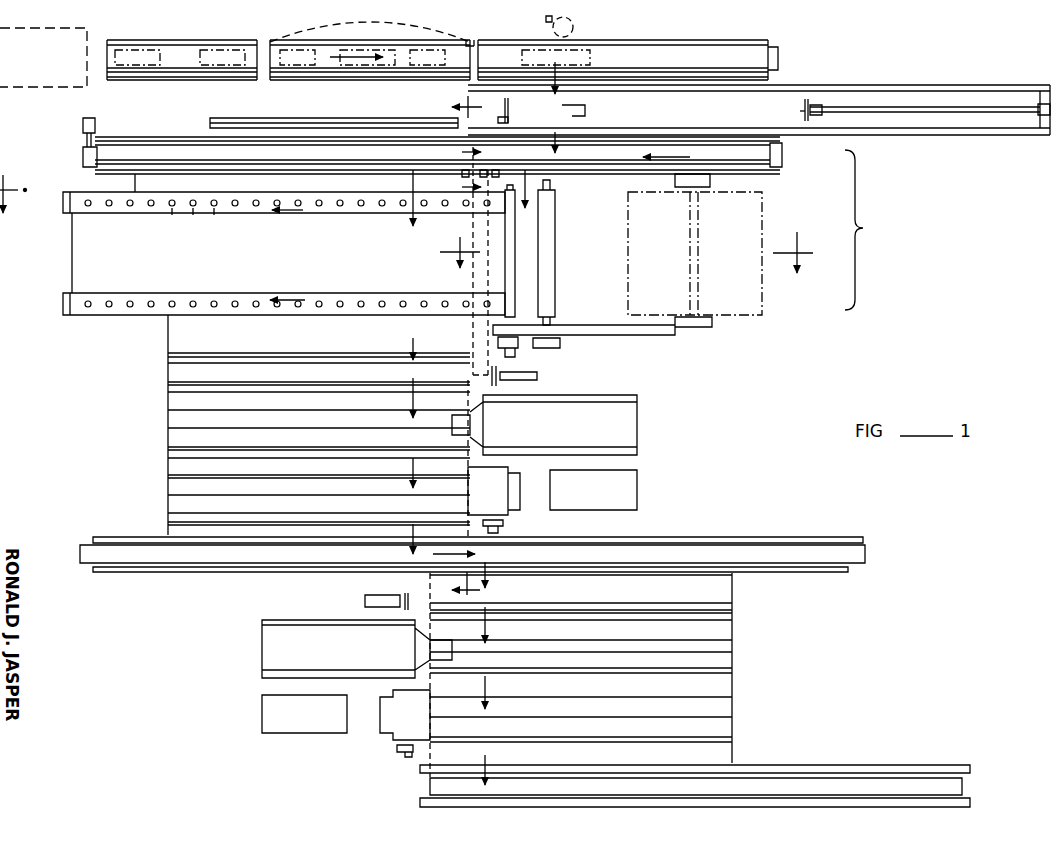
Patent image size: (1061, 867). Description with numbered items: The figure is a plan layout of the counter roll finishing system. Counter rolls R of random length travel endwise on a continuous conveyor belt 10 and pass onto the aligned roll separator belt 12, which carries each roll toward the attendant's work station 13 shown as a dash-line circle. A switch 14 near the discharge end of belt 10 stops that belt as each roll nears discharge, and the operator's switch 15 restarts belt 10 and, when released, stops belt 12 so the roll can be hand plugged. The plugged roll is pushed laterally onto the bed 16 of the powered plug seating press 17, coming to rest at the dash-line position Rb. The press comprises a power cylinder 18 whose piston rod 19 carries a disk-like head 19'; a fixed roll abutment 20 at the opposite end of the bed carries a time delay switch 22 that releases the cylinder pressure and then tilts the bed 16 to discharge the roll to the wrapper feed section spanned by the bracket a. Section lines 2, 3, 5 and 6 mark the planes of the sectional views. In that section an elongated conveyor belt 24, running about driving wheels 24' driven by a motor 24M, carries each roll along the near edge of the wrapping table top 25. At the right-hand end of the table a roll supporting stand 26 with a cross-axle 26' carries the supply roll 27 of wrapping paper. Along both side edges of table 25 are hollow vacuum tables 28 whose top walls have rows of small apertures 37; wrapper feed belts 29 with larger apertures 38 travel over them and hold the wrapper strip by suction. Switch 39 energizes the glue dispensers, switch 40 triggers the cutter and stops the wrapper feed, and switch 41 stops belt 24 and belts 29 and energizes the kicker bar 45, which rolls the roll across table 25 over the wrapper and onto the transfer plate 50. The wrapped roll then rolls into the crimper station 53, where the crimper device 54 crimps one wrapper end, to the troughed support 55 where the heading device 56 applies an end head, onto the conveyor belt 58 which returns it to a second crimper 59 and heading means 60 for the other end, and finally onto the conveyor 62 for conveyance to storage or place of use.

The counter roll R is at (114, 86).
The conveyor belt 10 is at (180, 66).
The roll separator belt 12 is at (516, 57).
The attendant's work station 13 is at (576, 32).
The switch 14 is at (468, 44).
The switch 15 is at (501, 32).
The kicker bar 45 is at (339, 124).
The bed 16 is at (750, 121).
The plug seating press 17 is at (942, 100).
The power cylinder 18 is at (992, 106).
The piston rod 19 is at (825, 86).
The disk-like head 19' is at (779, 103).
The roll abutment 20 is at (513, 108).
The time delay switch 22 is at (512, 120).
The plugged roll position Rb is at (587, 113).
The section line 2 is at (453, 348).
The conveyor belt 24 is at (448, 155).
The motor 24M is at (84, 126).
The belt driving wheels 24' is at (427, 162).
The third switch 41 is at (465, 170).
The switch 40 is at (482, 177).
The switch 39 is at (497, 171).
The section line 6 is at (478, 173).
The section line 3 is at (265, 203).
The section line 5 is at (633, 252).
The vacuum table 28 is at (105, 195).
The wrapping table top 25 is at (392, 277).
The wrapper feed belt 29 is at (146, 210).
The belt apertures 38 is at (172, 210).
The table apertures 37 is at (152, 183).
The roll supporting stand 26 is at (602, 280).
The cross-axle 26' is at (718, 253).
The supply roll 27 is at (763, 300).
The bracket a is at (861, 230).
The transfer plate 50 is at (185, 348).
The crimper station 53 is at (213, 430).
The crimper device 54 is at (623, 428).
The heading device 56 is at (623, 486).
The conveyor belt 58 is at (605, 553).
The troughed support 55 is at (395, 487).
The second crimper 59 is at (290, 648).
The heading means 60 is at (390, 733).
The conveyor 62 is at (737, 783).